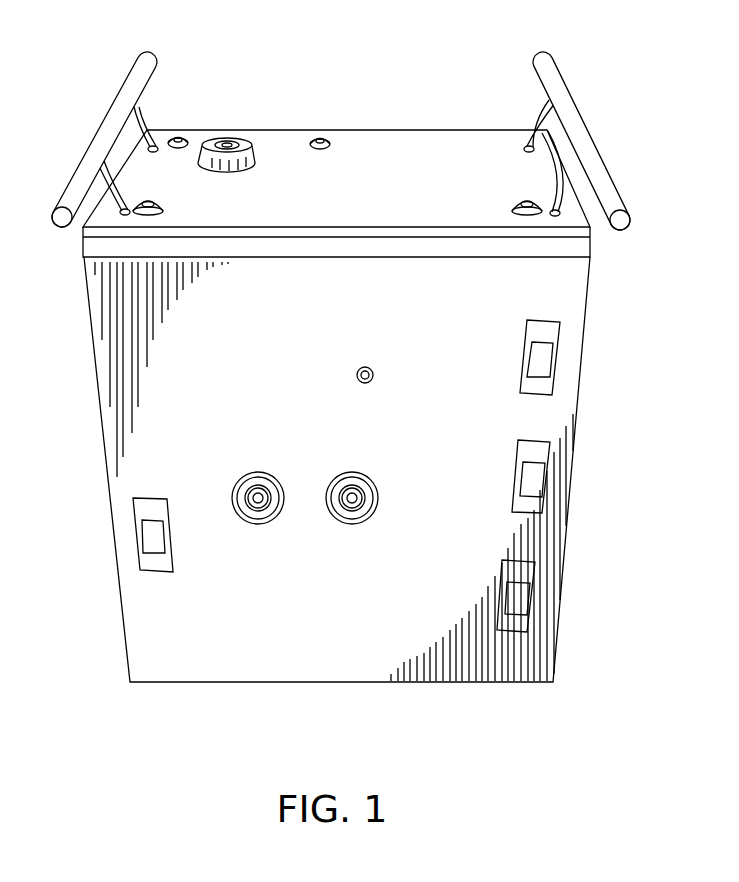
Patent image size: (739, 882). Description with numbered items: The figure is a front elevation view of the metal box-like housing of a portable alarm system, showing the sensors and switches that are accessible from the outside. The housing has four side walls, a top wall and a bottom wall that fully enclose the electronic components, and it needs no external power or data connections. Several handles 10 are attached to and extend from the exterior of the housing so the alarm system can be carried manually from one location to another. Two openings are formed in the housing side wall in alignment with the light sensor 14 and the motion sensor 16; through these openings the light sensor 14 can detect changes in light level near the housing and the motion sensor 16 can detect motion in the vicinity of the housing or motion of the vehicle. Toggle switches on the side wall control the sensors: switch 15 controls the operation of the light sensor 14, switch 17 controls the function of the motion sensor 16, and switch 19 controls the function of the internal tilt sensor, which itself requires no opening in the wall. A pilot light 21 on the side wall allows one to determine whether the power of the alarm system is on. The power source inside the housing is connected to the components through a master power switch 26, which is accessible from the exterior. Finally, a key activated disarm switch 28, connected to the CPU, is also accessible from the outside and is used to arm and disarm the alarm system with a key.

The handle 10 is at (112, 121).
The key activated disarm switch 28 is at (230, 140).
The pilot light 21 is at (356, 370).
The master power switch 26 is at (152, 535).
The light sensor 14 is at (258, 513).
The motion sensor 16 is at (352, 513).
The switch 17 is at (540, 357).
The switch 19 is at (533, 482).
The switch 15 is at (517, 593).